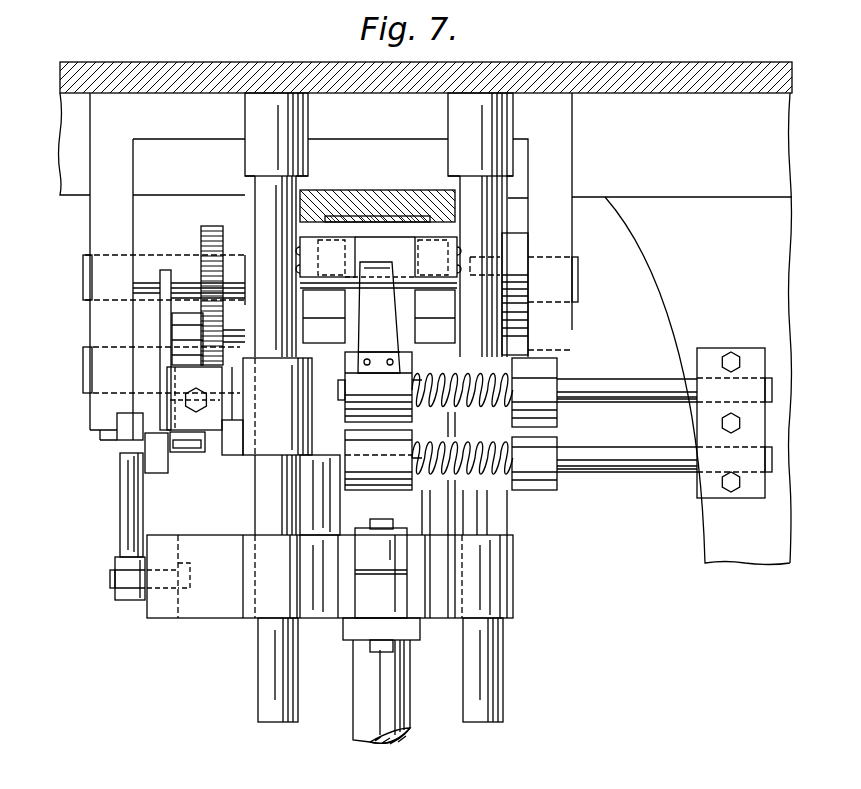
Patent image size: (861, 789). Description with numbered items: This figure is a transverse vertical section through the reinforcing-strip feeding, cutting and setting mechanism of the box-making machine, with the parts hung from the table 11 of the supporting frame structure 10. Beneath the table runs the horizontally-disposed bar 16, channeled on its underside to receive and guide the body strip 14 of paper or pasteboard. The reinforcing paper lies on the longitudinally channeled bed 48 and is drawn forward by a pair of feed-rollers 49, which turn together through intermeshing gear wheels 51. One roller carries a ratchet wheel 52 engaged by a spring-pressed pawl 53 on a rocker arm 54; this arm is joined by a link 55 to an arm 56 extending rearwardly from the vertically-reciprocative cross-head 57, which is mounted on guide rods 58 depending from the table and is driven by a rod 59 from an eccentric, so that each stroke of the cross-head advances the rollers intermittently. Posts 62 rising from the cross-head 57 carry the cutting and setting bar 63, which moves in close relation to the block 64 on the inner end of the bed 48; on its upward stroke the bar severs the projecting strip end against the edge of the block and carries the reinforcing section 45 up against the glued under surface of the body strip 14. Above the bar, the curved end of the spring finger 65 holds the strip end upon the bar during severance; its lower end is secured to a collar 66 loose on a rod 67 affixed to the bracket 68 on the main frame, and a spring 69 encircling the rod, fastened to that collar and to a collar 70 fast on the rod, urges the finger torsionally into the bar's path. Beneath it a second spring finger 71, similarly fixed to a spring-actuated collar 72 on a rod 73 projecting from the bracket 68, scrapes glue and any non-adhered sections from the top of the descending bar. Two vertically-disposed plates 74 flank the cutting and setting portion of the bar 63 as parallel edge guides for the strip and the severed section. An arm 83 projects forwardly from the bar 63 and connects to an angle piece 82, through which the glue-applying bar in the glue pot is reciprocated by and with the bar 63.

The supporting frame structure 10 is at (738, 545).
The table 11 is at (660, 93).
The strip of paper or pasteboard 14 is at (375, 212).
The horizontally-disposed bar 16 is at (420, 192).
The reinforcing sections 45 is at (412, 265).
The longitudinally channeled bed 48 is at (343, 388).
The feed-rollers 49 is at (512, 310).
The intermeshing gear wheels 51 is at (200, 233).
The ratchet wheel 52 is at (185, 323).
The spring-pressed pawl 53 is at (190, 452).
The rocker arm 54 is at (158, 473).
The link 55 is at (128, 510).
The arm 56 is at (176, 618).
The cross-head 57 is at (361, 569).
The guide rods 58 is at (275, 690).
The rod 59 is at (365, 726).
The posts 62 is at (315, 512).
The bar 63 is at (378, 350).
The block 64 is at (312, 242).
The spring finger 65 is at (379, 317).
The collar 66 is at (345, 408).
The rod 67 is at (627, 392).
The bracket 68 is at (750, 358).
The spring 69 is at (522, 345).
The collar 70 is at (577, 402).
The spring finger 71 is at (367, 520).
The spring-actuated collar 72 is at (345, 440).
The rod 73 is at (620, 470).
The vertically-disposed plates 74 is at (348, 250).
The angle piece 82 is at (165, 285).
The arm 83 is at (230, 440).